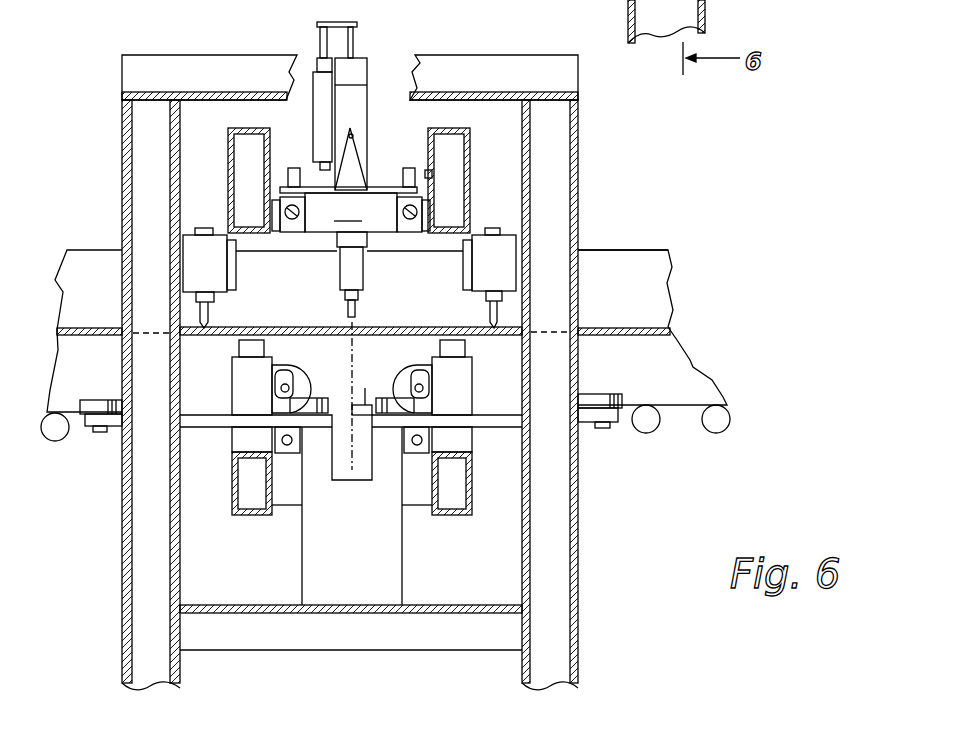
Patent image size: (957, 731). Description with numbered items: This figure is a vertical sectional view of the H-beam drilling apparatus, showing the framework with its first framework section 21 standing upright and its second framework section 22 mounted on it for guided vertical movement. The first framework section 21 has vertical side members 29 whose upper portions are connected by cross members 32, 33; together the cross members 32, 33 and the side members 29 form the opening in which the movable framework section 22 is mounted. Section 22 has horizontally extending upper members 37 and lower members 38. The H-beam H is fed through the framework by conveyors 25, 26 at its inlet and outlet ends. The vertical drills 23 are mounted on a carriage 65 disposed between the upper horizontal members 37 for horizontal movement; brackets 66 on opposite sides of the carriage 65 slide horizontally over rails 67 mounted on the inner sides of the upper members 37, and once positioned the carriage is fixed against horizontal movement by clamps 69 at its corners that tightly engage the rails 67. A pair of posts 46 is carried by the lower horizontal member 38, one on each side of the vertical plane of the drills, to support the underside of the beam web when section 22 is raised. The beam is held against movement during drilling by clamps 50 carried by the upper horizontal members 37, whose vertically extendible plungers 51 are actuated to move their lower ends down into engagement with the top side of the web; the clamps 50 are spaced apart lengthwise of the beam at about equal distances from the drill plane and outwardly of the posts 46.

The first framework section 21 is at (168, 55).
The cross member 33 is at (452, 53).
The upper member 37 is at (470, 158).
The clamp 69 is at (402, 167).
The rail 67 is at (278, 200).
The carriage 65 is at (348, 209).
The bracket 66 is at (410, 233).
The clamp 50 is at (214, 236).
The plunger 51 is at (212, 320).
The vertical drill 23 is at (337, 278).
The H-beam H is at (623, 251).
The side member 29 is at (582, 289).
The post 46 is at (458, 387).
The conveyor 26 is at (62, 442).
The conveyor 25 is at (660, 434).
The second framework section 22 is at (246, 514).
The lower member 38 is at (471, 500).
The cross member 32 is at (446, 605).